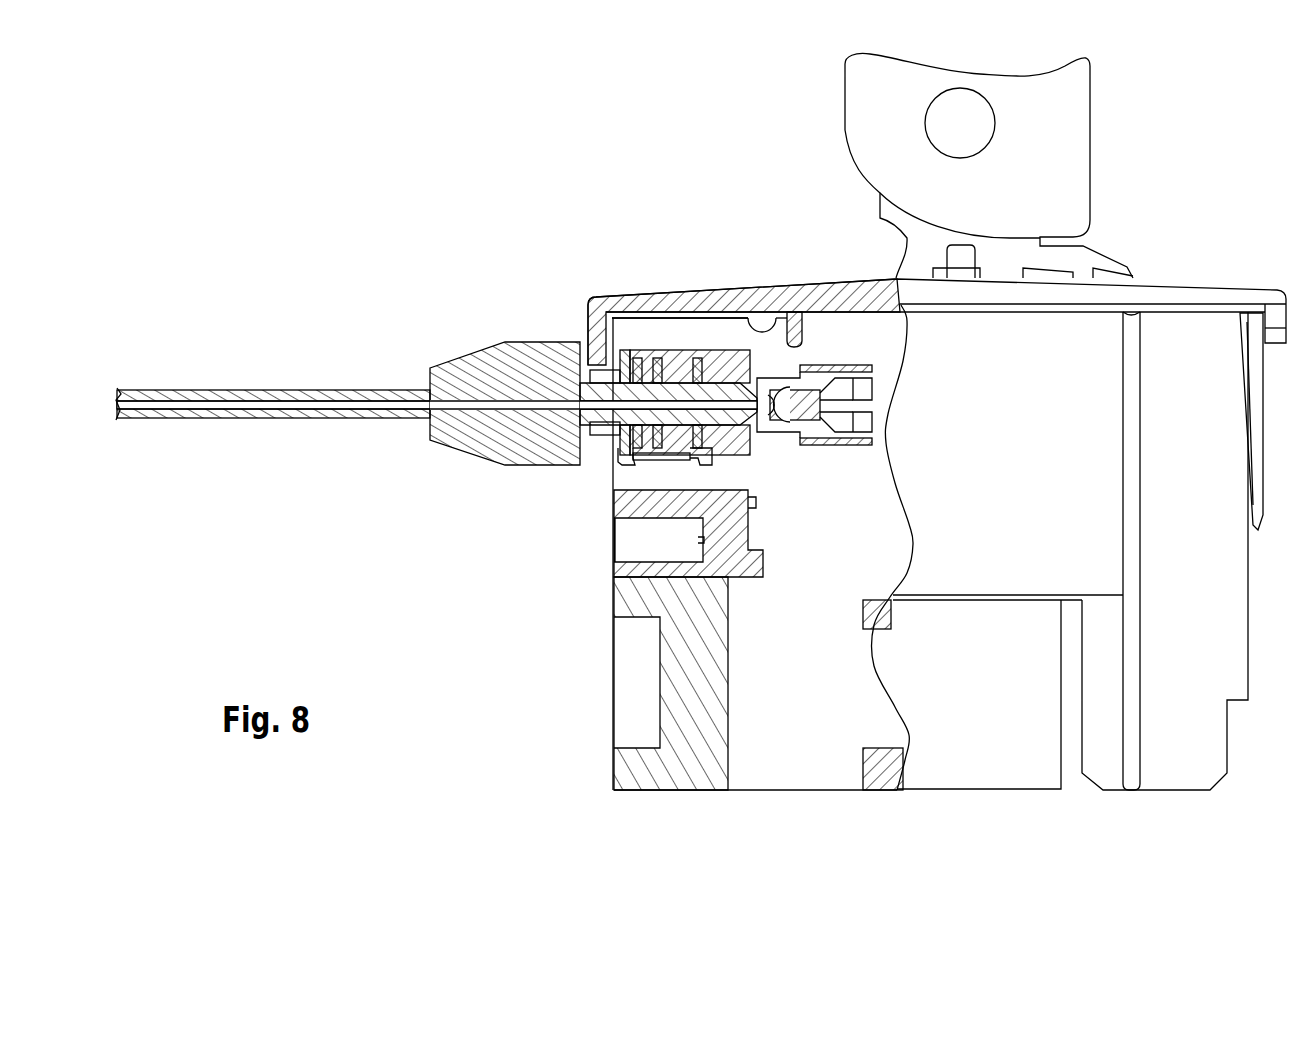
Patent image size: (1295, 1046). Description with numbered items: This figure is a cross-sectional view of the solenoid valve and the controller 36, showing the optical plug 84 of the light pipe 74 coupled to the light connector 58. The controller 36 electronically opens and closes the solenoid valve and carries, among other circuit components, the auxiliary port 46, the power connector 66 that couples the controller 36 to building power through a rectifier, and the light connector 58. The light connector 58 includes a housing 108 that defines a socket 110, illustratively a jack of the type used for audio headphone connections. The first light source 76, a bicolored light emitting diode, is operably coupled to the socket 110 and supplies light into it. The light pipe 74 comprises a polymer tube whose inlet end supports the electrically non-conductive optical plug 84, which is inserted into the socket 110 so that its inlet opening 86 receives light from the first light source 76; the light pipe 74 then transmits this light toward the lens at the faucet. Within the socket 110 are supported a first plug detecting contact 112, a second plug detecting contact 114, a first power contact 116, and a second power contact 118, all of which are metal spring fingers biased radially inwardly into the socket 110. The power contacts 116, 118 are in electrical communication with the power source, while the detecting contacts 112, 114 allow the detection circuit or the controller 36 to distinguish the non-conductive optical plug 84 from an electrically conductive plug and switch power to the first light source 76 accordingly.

The controller 36 is at (552, 788).
The auxiliary port 46 is at (650, 793).
The light connector 58 is at (729, 345).
The power connector 66 is at (612, 568).
The light pipe 74 is at (283, 388).
The first light source 76 is at (805, 368).
The optical plug 84 is at (678, 355).
The inlet opening 86 is at (790, 432).
The housing 108 is at (736, 450).
The socket 110 is at (770, 372).
The first plug detecting contact 112 is at (622, 348).
The second plug detecting contact 114 is at (620, 458).
The first power contact 116 is at (657, 350).
The second power contact 118 is at (688, 458).